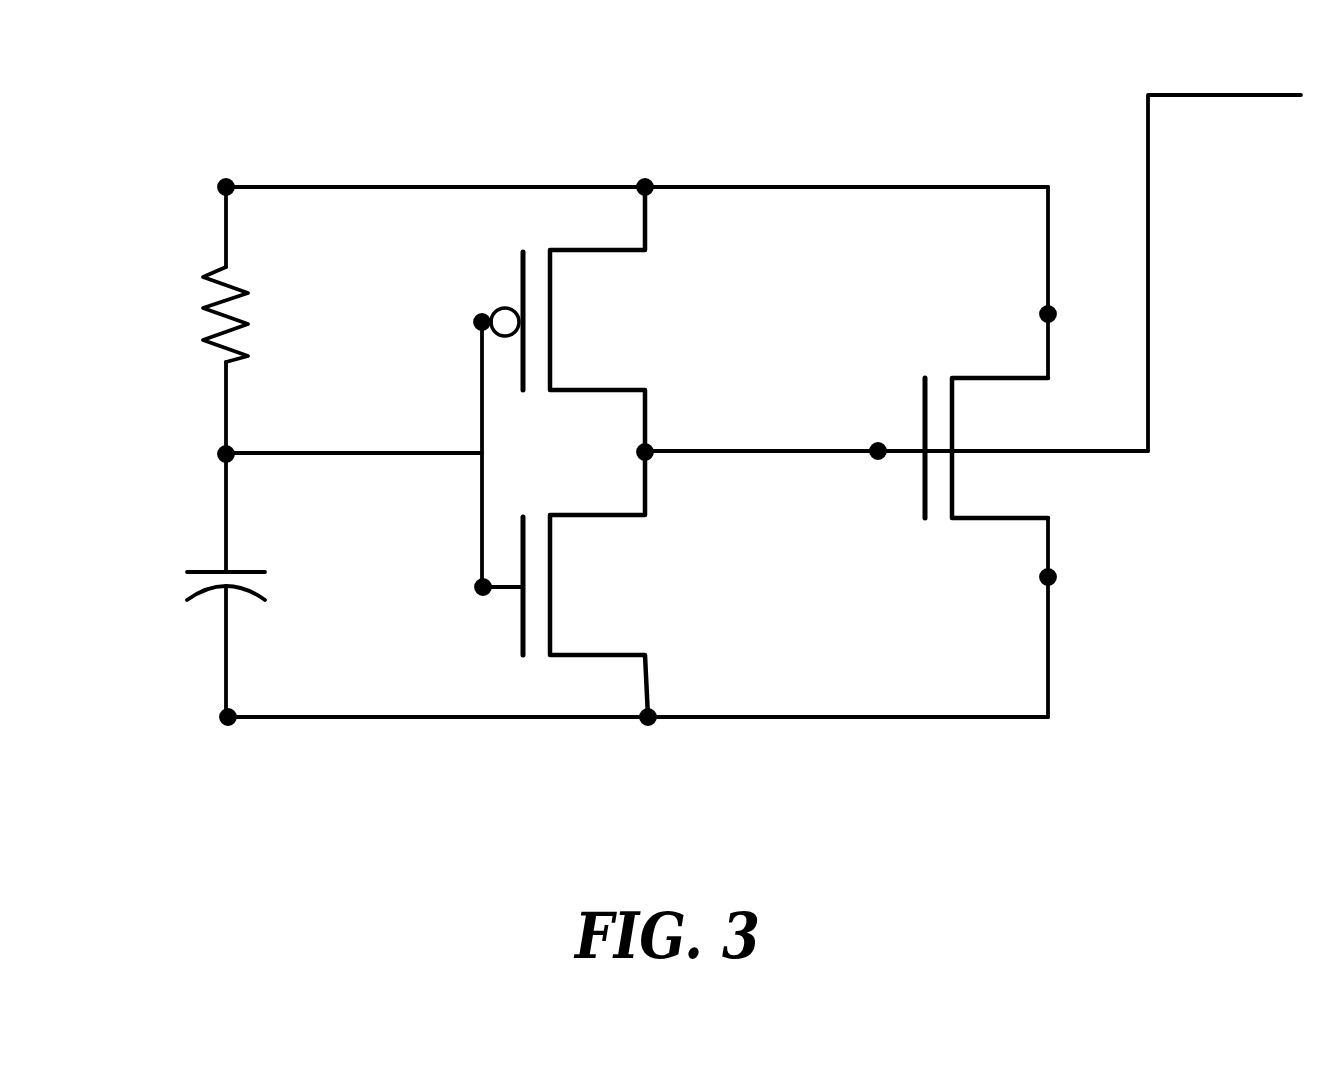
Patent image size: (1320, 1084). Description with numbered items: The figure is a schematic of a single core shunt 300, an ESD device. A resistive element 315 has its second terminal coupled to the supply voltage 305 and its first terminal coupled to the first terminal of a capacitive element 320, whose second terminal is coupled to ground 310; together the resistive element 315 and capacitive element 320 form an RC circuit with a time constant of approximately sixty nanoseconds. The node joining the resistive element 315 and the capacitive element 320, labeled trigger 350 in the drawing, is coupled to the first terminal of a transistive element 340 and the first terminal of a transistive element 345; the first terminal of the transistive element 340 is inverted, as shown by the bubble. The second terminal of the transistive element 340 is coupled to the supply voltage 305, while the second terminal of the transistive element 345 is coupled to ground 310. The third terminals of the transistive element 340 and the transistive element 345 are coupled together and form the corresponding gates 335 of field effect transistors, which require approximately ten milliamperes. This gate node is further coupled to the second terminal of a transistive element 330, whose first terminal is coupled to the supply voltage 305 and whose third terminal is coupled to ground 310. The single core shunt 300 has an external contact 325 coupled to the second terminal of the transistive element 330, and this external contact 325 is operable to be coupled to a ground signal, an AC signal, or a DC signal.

The single core shunt 300 is at (693, 872).
The supply voltage 305 is at (547, 185).
The ground 310 is at (548, 718).
The resistive element 315 is at (188, 312).
The capacitive element 320 is at (178, 583).
The external contact 325 is at (1212, 93).
The transistive element 330 is at (1050, 427).
The gates 335 is at (772, 453).
The transistive element 340 is at (638, 322).
The transistive element 345 is at (642, 587).
The trigger line 350 is at (310, 455).